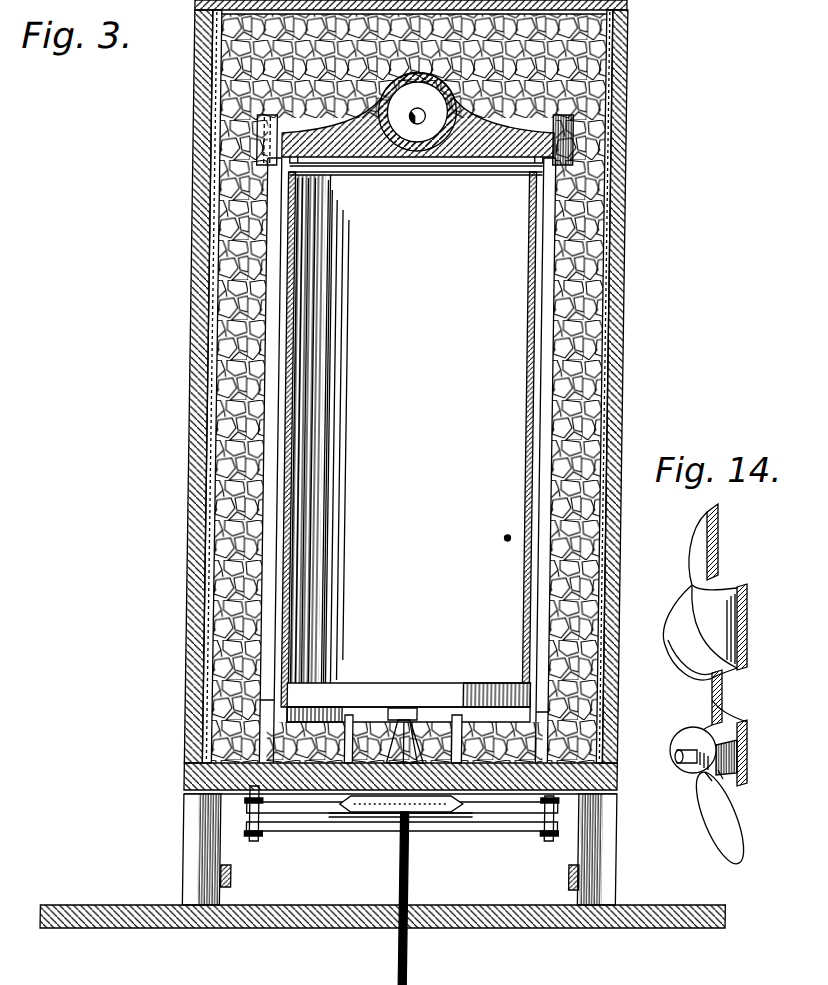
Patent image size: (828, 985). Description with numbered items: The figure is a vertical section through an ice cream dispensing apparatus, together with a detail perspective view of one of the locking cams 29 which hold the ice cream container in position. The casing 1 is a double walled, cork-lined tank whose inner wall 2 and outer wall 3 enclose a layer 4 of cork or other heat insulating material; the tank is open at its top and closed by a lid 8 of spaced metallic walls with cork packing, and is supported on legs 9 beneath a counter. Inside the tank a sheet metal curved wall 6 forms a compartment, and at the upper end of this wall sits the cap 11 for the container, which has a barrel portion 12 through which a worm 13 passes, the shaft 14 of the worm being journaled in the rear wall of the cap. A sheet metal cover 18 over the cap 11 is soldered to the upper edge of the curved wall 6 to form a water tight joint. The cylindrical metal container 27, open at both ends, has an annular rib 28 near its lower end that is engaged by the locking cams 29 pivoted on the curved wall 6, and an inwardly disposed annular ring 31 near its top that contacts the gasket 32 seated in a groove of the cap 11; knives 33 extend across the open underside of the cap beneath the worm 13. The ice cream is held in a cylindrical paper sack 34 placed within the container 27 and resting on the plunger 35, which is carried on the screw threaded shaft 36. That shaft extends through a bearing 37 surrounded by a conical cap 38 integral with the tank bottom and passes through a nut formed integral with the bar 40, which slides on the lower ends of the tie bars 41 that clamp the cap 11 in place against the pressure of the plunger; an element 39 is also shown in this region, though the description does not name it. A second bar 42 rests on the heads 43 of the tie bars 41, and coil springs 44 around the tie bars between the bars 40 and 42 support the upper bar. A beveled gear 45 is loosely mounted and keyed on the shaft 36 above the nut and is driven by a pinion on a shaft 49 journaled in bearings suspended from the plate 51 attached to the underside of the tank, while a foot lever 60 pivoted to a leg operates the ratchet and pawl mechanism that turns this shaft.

In FIG. 3, the casing 1 is at (198, 428).
In FIG. 3, the inner wall 2 is at (217, 300).
In FIG. 3, the outer wall 3 is at (199, 273).
In FIG. 3, the layer of cork 4 is at (202, 365).
In FIG. 3, the curved wall 6 is at (282, 352).
In FIG. 3, the lid 8 is at (628, 6).
In FIG. 3, the legs 9 is at (204, 838).
In FIG. 3, the cap 11 is at (325, 147).
In FIG. 3, the barrel portion 12 is at (329, 140).
In FIG. 3, the worm 13 is at (432, 133).
In FIG. 3, the shaft 14 is at (416, 103).
In FIG. 3, the sheet metal cover 18 is at (464, 100).
In FIG. 3, the container 27 is at (295, 542).
In FIG. 14, the container 27 is at (708, 595).
In FIG. 3, the annular rib 28 is at (306, 660).
In FIG. 14, the annular rib 28 is at (692, 657).
In FIG. 3, the locking cams 29 is at (278, 698).
In FIG. 14, the locking cams 29 is at (695, 770).
In FIG. 3, the annular ring 31 is at (492, 163).
In FIG. 3, the gasket 32 is at (525, 173).
In FIG. 3, the knives 33 is at (417, 152).
In FIG. 3, the paper sack 34 is at (303, 403).
In FIG. 3, the plunger 35 is at (370, 690).
In FIG. 3, the screw threaded shaft 36 is at (420, 897).
In FIG. 3, the bearing 37 is at (398, 808).
In FIG. 3, the conical cap 38 is at (410, 840).
In FIG. 3, the bearing plate 39 is at (439, 797).
In FIG. 3, the bar 40 is at (318, 810).
In FIG. 3, the tie bars 41 is at (267, 732).
In FIG. 3, the bar 42 is at (512, 828).
In FIG. 3, the heads 43 is at (264, 832).
In FIG. 3, the coil springs 44 is at (259, 813).
In FIG. 3, the beveled gear 45 is at (458, 810).
In FIG. 3, the shaft 49 is at (590, 888).
In FIG. 3, the plate 51 is at (213, 793).
In FIG. 3, the foot lever 60 is at (240, 887).